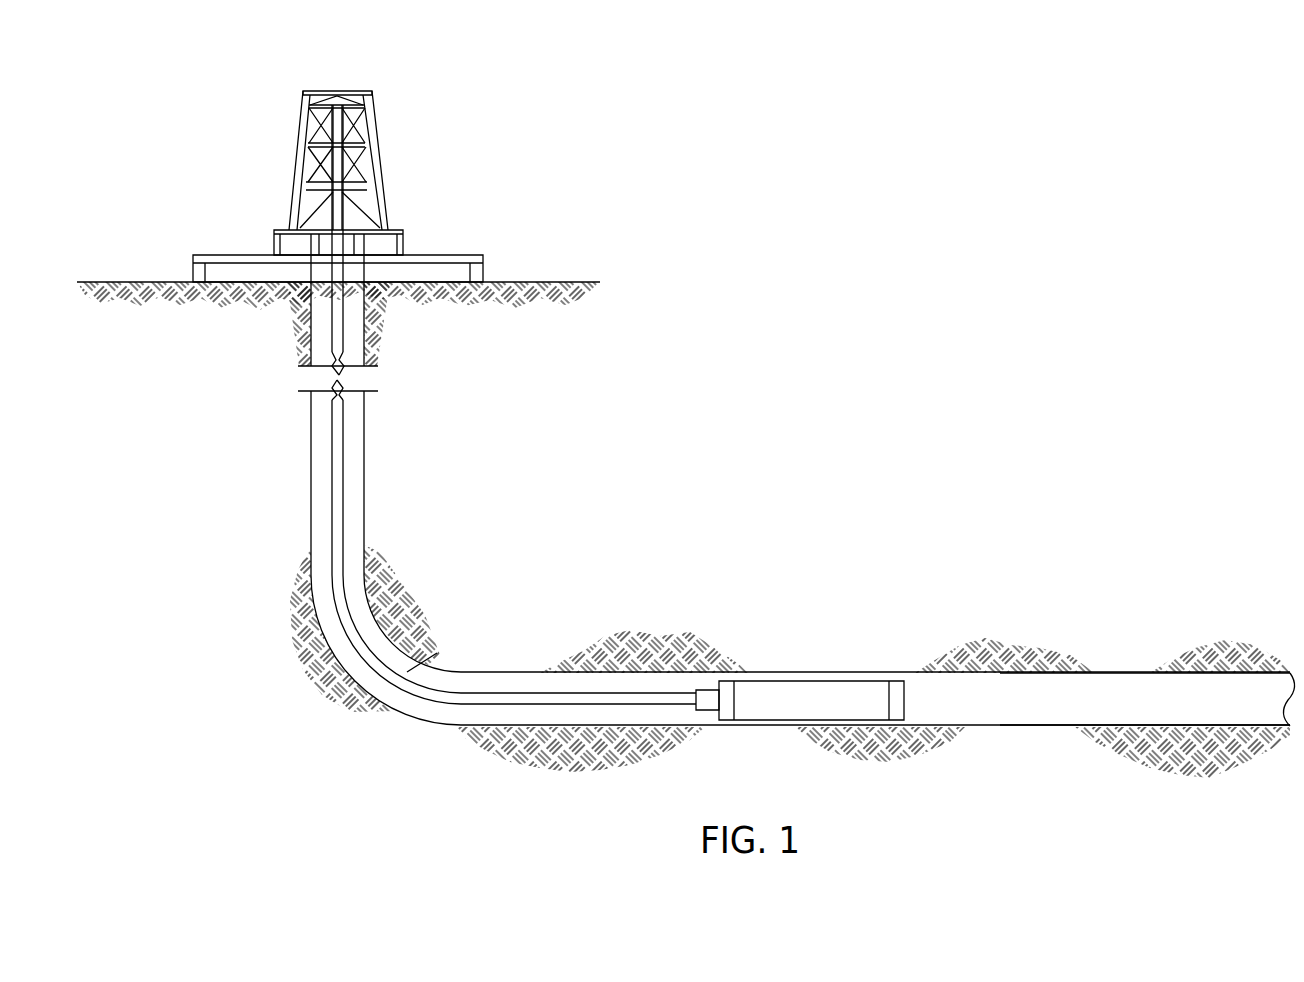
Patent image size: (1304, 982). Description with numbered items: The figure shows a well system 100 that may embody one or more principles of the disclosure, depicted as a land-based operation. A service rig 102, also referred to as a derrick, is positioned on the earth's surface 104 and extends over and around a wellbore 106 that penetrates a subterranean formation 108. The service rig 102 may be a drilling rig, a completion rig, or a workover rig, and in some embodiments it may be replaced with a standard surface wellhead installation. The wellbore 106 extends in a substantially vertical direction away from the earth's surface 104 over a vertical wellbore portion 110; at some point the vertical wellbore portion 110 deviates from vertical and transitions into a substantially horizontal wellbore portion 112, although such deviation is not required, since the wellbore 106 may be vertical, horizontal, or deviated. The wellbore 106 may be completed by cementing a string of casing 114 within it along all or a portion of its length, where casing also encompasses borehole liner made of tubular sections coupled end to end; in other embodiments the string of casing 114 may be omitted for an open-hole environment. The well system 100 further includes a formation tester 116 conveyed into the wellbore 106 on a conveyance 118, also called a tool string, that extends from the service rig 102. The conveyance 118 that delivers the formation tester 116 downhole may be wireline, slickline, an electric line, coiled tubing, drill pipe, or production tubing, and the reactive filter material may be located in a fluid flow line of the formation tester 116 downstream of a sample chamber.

The well system 100 is at (586, 341).
The service rig 102 is at (466, 100).
The earth's surface 104 is at (555, 281).
The wellbore 106 is at (372, 450).
The subterranean formation 108 is at (550, 607).
The vertical wellbore portion 110 is at (214, 455).
The horizontal wellbore portion 112 is at (1125, 665).
The string of casing 114 is at (365, 489).
The formation tester 116 is at (748, 735).
The conveyance 118 is at (437, 653).